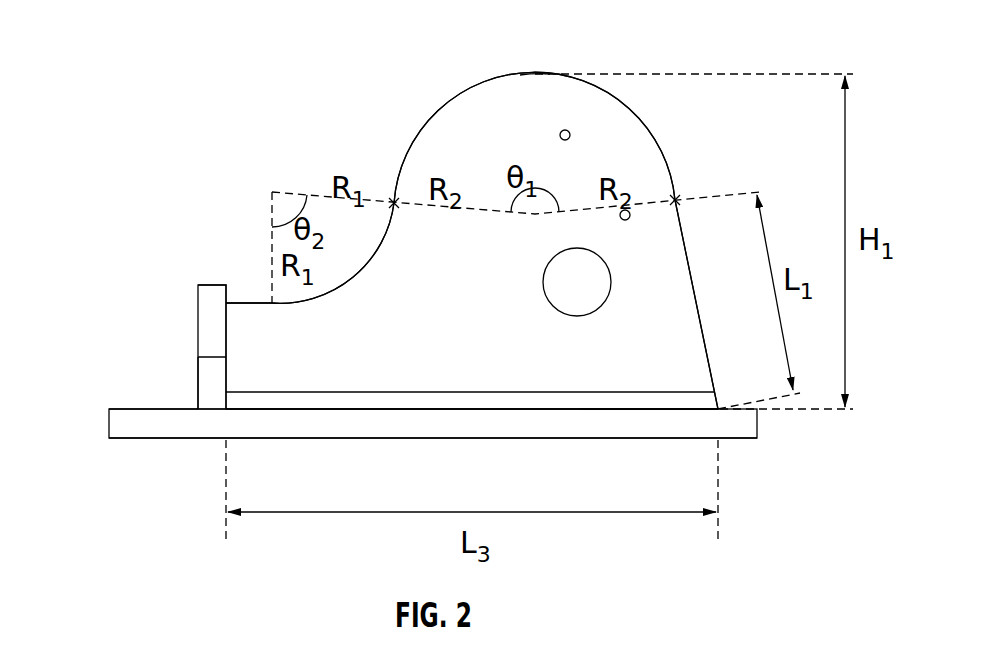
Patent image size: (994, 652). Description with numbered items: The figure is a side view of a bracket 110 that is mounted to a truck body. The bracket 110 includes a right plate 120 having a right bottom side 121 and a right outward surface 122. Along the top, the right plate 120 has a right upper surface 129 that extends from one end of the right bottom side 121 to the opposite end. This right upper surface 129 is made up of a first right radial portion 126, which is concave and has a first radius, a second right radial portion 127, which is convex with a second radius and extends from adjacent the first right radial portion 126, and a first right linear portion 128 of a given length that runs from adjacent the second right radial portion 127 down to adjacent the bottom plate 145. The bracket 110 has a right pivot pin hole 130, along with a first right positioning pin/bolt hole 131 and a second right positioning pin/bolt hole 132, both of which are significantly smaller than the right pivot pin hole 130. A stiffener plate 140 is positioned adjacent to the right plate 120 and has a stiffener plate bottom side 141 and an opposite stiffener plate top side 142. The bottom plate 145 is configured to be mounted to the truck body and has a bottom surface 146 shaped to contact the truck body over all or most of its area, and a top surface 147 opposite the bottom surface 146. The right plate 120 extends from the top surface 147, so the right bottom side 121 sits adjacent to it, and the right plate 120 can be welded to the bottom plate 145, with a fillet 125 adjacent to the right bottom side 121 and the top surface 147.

The bracket 110 is at (187, 70).
The right plate 120 is at (482, 313).
The right bottom side 121 is at (417, 410).
The right outward surface 122 is at (505, 372).
The fillet 125 is at (602, 398).
The first right radial portion 126 is at (350, 268).
The second right radial portion 127 is at (540, 73).
The first right linear portion 128 is at (713, 363).
The right upper surface 129 is at (440, 108).
The right pivot pin hole 130 is at (613, 280).
The first right positioning pin/bolt hole 131 is at (566, 130).
The second right positioning pin/bolt hole 132 is at (630, 212).
The stiffener plate 140 is at (205, 298).
The stiffener plate bottom side 141 is at (212, 409).
The stiffener plate top side 142 is at (216, 285).
The bottom plate 145 is at (120, 428).
The bottom surface 146 is at (165, 440).
The top surface 147 is at (123, 408).